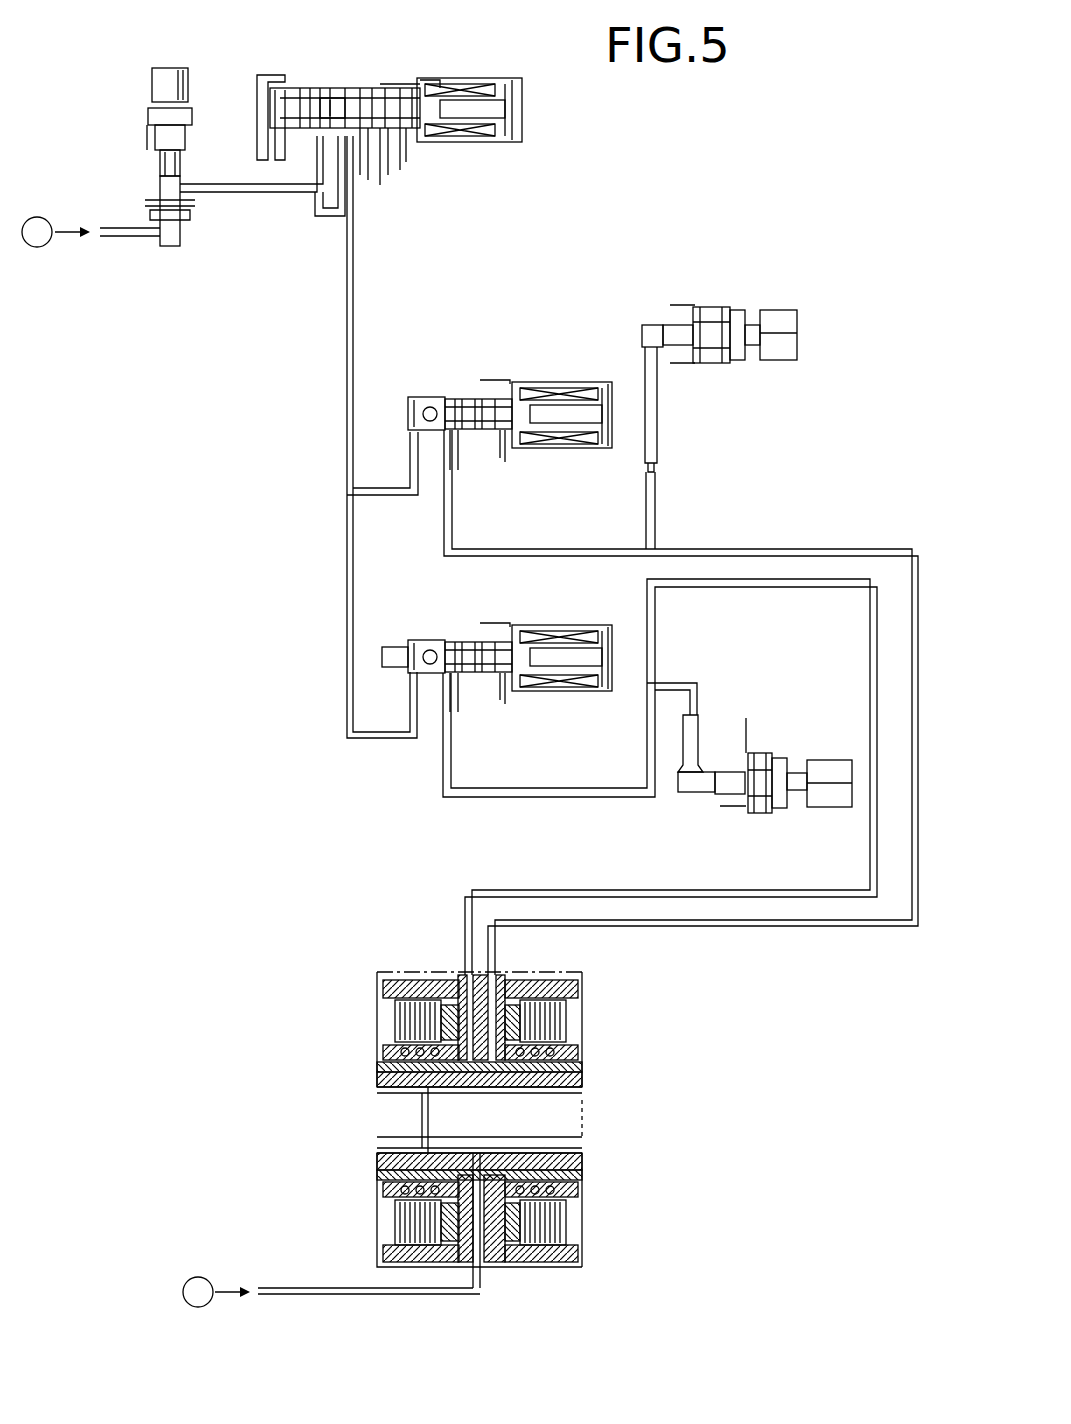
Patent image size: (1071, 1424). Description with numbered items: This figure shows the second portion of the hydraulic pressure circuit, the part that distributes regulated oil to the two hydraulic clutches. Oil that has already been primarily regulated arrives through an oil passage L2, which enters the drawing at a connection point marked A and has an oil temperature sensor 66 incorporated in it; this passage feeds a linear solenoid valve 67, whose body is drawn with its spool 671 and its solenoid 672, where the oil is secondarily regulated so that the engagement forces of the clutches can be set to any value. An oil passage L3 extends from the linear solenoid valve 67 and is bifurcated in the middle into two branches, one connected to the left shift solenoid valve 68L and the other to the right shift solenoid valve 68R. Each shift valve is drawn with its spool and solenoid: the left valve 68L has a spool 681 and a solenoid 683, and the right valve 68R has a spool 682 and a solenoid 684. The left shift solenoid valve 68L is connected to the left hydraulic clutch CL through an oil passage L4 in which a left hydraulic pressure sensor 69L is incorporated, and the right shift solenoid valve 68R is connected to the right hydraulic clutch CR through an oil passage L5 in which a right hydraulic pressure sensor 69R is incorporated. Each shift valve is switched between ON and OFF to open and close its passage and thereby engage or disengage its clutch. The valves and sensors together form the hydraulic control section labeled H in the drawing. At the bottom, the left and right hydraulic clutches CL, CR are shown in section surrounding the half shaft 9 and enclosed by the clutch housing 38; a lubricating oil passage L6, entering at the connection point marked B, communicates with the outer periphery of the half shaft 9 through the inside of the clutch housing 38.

The oil temperature sensor 66 is at (168, 88).
The linear solenoid valve 67 is at (389, 113).
The spool of control valve 67 671 is at (332, 100).
The solenoid of control valve 67 672 is at (460, 53).
The right shift solenoid valve 68R is at (502, 391).
The left shift solenoid valve 68L is at (495, 639).
The spool of left clutch control valve 681 is at (495, 655).
The spool of right clutch control valve 682 is at (480, 405).
The solenoid of left clutch control valve 683 is at (552, 638).
The solenoid of right clutch control valve 684 is at (552, 395).
The right hydraulic pressure sensor 69R is at (773, 322).
The left hydraulic pressure sensor 69L is at (823, 770).
The half shaft 9 is at (555, 1113).
The clutch housing 38 is at (492, 1255).
The oil passage L2 is at (245, 190).
The oil passage L3 is at (345, 410).
The oil passage L4 is at (740, 582).
The oil passage L5 is at (552, 550).
The lubricating oil passage L6 is at (340, 1286).
The hydraulic control unit H is at (392, 808).
The left hydraulic clutch CL is at (364, 1000).
The right hydraulic clutch CR is at (606, 1022).
The connection point A is at (55, 232).
The connection point B is at (215, 1292).